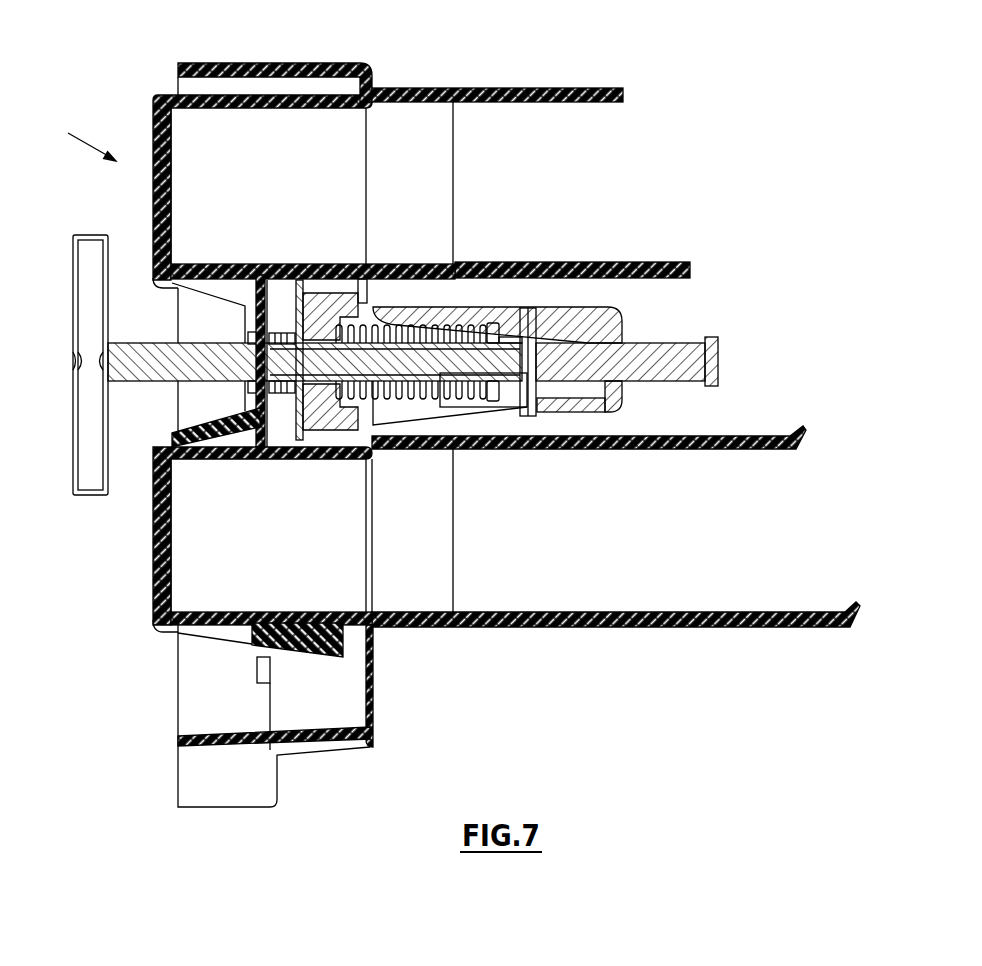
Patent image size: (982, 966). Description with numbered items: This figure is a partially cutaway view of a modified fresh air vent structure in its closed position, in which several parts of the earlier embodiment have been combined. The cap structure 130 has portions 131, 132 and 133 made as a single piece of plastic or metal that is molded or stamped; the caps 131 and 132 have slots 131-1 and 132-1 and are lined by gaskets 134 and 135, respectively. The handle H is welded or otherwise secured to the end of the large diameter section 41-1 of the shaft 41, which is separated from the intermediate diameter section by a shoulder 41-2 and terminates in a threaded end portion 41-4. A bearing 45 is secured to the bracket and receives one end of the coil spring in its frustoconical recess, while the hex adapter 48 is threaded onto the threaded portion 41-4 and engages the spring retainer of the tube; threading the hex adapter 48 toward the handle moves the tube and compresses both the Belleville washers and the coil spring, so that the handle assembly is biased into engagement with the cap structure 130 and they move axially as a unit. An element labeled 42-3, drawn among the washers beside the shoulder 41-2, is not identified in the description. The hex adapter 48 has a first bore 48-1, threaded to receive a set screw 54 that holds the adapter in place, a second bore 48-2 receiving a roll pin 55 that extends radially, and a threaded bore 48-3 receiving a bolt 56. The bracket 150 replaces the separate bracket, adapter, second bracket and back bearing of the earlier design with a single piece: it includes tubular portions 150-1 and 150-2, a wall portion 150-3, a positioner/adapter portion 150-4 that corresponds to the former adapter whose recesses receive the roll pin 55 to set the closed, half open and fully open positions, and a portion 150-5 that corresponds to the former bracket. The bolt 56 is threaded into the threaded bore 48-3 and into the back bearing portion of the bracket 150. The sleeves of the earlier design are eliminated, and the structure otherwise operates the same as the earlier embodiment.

The cap structure 130 is at (69, 141).
The handle H is at (74, 447).
The cap 131 is at (155, 174).
The gasket 134 is at (171, 178).
The slot 131-1 is at (187, 285).
The bracket 150 is at (300, 63).
The tubular portion 150-1 is at (432, 102).
The bracket portion 150-5 is at (428, 305).
The wall portion 150-3 is at (357, 283).
The shaft 41 is at (157, 343).
The large diameter section 41-1 is at (249, 334).
The shoulder 41-2 is at (258, 387).
The bracket wall 42-3 is at (297, 385).
The bearing 45 is at (318, 295).
The second bore 48-2 is at (546, 307).
The first bore 48-1 is at (494, 333).
The set screw 54 is at (525, 337).
The roll pin 55 is at (533, 416).
The bolt 56 is at (720, 356).
The threaded bore 48-3 is at (613, 380).
The hex adapter 48 is at (546, 408).
The threaded end portion 41-4 is at (473, 407).
The positioner/adapter portion 150-4 is at (604, 412).
The tubular portion 150-2 is at (436, 612).
The cap structure portion 133 is at (245, 456).
The cap 132 is at (156, 548).
The gasket 135 is at (172, 552).
The slot 132-1 is at (213, 635).